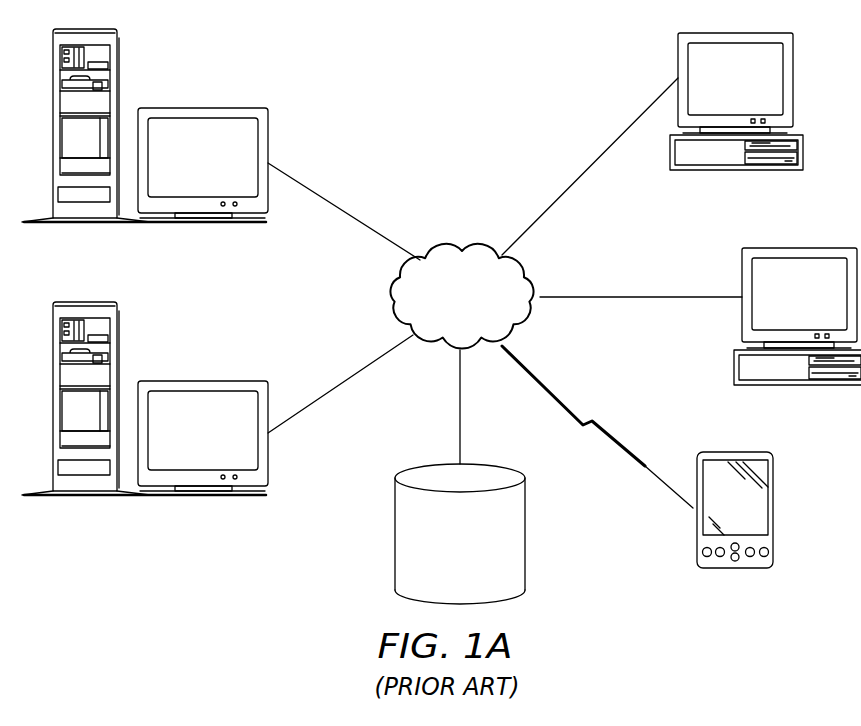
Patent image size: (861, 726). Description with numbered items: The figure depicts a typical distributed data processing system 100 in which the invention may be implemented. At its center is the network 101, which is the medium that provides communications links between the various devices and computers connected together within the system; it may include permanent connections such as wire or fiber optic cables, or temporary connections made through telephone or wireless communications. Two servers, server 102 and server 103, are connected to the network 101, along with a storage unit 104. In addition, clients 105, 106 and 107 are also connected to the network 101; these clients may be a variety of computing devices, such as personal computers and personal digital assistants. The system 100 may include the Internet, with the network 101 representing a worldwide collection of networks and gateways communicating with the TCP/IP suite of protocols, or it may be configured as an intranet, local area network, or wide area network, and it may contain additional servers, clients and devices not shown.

The distributed data processing system 100 is at (523, 80).
The network 101 is at (440, 326).
The server 102 is at (226, 444).
The server 103 is at (226, 171).
The storage unit 104 is at (441, 572).
The client 105 is at (715, 91).
The client 106 is at (779, 306).
The client 107 is at (773, 510).